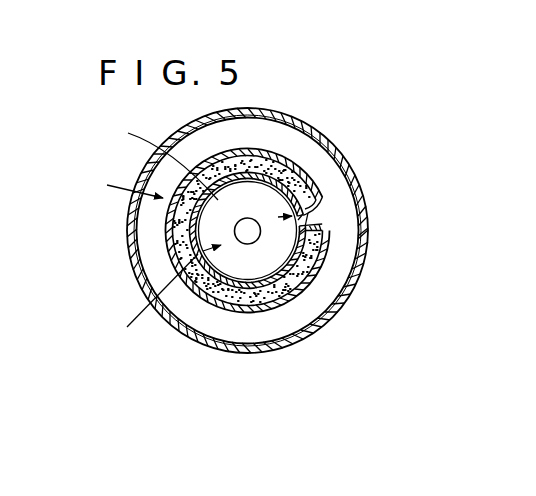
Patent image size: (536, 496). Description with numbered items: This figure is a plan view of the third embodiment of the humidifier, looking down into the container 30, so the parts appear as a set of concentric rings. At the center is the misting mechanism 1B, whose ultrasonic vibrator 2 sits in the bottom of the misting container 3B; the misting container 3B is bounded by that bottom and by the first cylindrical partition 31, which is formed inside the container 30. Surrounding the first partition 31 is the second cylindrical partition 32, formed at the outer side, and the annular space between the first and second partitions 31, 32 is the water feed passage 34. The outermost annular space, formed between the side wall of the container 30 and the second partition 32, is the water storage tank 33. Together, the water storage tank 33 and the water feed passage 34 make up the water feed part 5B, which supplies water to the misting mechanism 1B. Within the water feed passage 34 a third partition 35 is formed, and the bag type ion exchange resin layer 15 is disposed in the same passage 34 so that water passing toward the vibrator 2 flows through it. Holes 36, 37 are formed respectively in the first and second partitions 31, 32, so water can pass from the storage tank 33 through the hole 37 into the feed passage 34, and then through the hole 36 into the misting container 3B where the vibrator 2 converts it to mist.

The ultrasonic vibrator 2 is at (249, 218).
The bag type ion exchange resin layer 15 is at (279, 298).
The container 30 is at (366, 268).
The first cylindrical partition 31 is at (302, 211).
The second cylindrical partition 32 is at (275, 152).
The water storage tank 33 is at (153, 262).
The water feed passage 34 is at (223, 312).
The third partition 35 is at (297, 204).
The hole 36 is at (298, 218).
The hole 37 is at (349, 237).
The misting mechanism 1B is at (125, 349).
The misting container 3B is at (156, 159).
The water feed part 5B is at (105, 194).